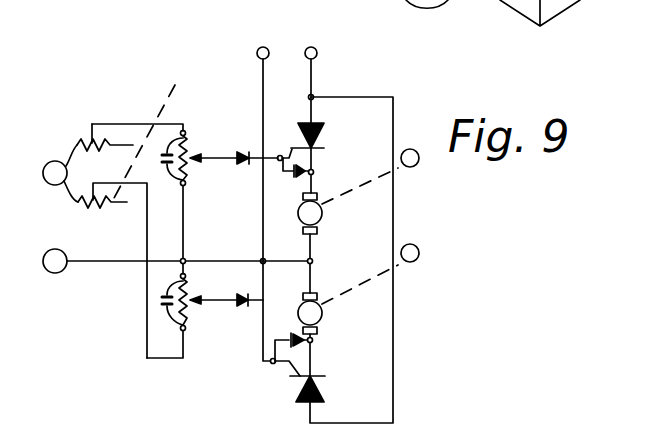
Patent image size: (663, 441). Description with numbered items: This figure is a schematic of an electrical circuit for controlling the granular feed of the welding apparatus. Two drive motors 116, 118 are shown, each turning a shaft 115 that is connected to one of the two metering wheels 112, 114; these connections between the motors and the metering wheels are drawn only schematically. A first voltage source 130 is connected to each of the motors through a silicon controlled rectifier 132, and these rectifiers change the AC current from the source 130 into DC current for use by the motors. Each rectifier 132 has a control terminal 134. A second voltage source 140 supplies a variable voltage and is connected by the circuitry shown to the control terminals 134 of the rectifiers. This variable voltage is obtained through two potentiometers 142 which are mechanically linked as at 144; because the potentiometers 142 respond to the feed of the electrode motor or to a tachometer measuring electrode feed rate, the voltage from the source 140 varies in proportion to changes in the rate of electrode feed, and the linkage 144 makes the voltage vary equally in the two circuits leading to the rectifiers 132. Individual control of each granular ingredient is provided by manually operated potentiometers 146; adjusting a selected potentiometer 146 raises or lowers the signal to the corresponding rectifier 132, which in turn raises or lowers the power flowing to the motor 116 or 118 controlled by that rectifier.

The metering wheel 112 is at (413, 244).
The metering wheel 114 is at (409, 149).
The shaft 115 is at (372, 273).
The drive motor 116 is at (322, 313).
The drive motor 118 is at (318, 205).
The first voltage source 130 is at (302, 43).
The silicon controlled rectifier 132 is at (326, 137).
The control terminal 134 is at (292, 142).
The second voltage source 140 is at (46, 194).
The potentiometer 142 is at (75, 145).
The mechanical linkage 144 is at (157, 120).
The potentiometer 146 is at (194, 153).